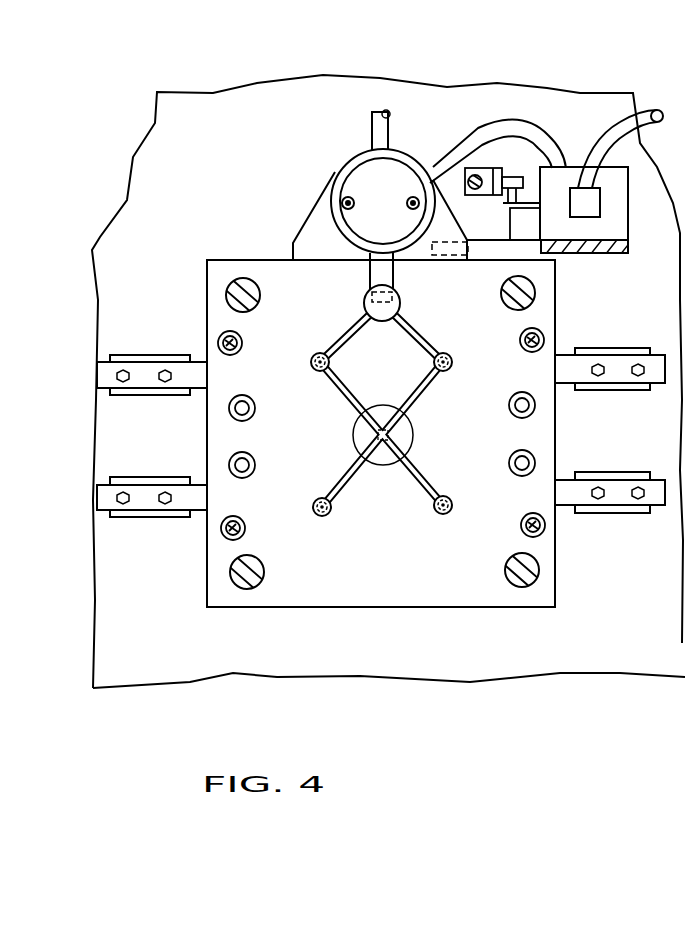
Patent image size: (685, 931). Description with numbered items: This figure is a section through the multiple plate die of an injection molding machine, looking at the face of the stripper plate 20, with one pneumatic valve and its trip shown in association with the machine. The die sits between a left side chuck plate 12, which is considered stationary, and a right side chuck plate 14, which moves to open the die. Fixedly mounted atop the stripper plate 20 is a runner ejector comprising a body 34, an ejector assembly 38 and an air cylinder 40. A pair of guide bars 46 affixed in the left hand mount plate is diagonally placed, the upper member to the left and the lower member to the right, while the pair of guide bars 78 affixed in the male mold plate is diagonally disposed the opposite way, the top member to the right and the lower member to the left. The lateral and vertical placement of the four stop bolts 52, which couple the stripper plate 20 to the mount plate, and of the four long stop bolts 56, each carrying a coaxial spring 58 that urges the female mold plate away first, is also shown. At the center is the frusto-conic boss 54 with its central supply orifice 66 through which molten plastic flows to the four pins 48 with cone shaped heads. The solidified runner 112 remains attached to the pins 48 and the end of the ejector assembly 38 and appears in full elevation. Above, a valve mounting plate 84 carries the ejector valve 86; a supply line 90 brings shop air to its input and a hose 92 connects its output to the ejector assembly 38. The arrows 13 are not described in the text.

The left side chuck plate 12 is at (165, 172).
The direction arrow 13 is at (276, 440).
The right side chuck plate 14 is at (373, 368).
The stripper plate 20 is at (317, 581).
The body 34 is at (333, 177).
The ejector assembly 38 is at (375, 278).
The air cylinder 40 is at (380, 192).
The guide bars 46 is at (226, 296).
The pins 48 is at (453, 352).
The stop bolts 52 is at (230, 462).
The boss 54 is at (388, 462).
The long stop bolts 56 is at (218, 342).
The coaxial spring 58 is at (238, 352).
The central supply orifice 66 is at (372, 440).
The guide bars 78 is at (500, 293).
The valve mounting plate 84 is at (498, 240).
The ejector valve 86 is at (558, 180).
The supply line 90 is at (622, 122).
The hose 92 is at (480, 144).
The runner 112 is at (337, 513).